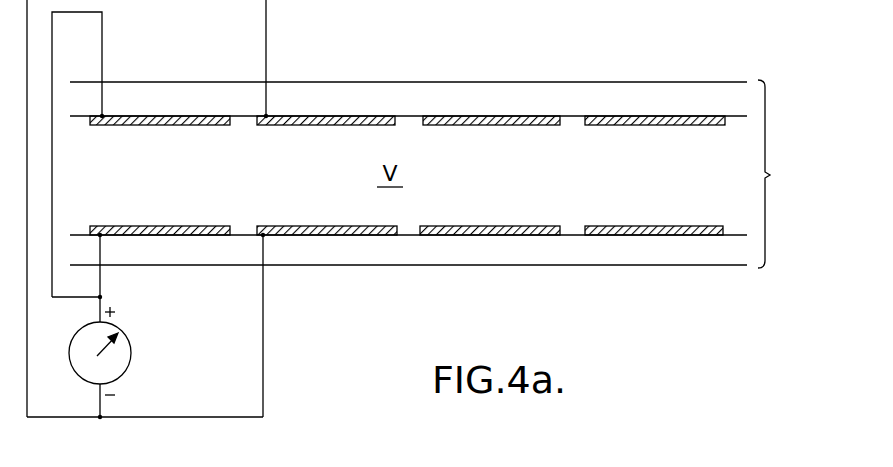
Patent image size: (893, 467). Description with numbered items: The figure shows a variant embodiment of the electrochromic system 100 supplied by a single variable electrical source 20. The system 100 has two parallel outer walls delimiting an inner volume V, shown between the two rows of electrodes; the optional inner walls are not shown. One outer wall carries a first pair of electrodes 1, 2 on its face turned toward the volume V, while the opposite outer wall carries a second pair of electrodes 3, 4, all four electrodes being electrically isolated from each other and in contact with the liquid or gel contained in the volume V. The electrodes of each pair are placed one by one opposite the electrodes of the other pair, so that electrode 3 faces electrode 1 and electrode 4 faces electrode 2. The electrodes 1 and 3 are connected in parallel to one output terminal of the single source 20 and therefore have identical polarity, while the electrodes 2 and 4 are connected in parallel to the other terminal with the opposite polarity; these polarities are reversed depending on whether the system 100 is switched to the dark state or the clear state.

The electrode 1 is at (180, 235).
The electrode 2 is at (340, 235).
The electrode 3 is at (180, 116).
The electrode 4 is at (327, 116).
The single source 20 is at (76, 373).
The electrochromic system 100 is at (788, 174).